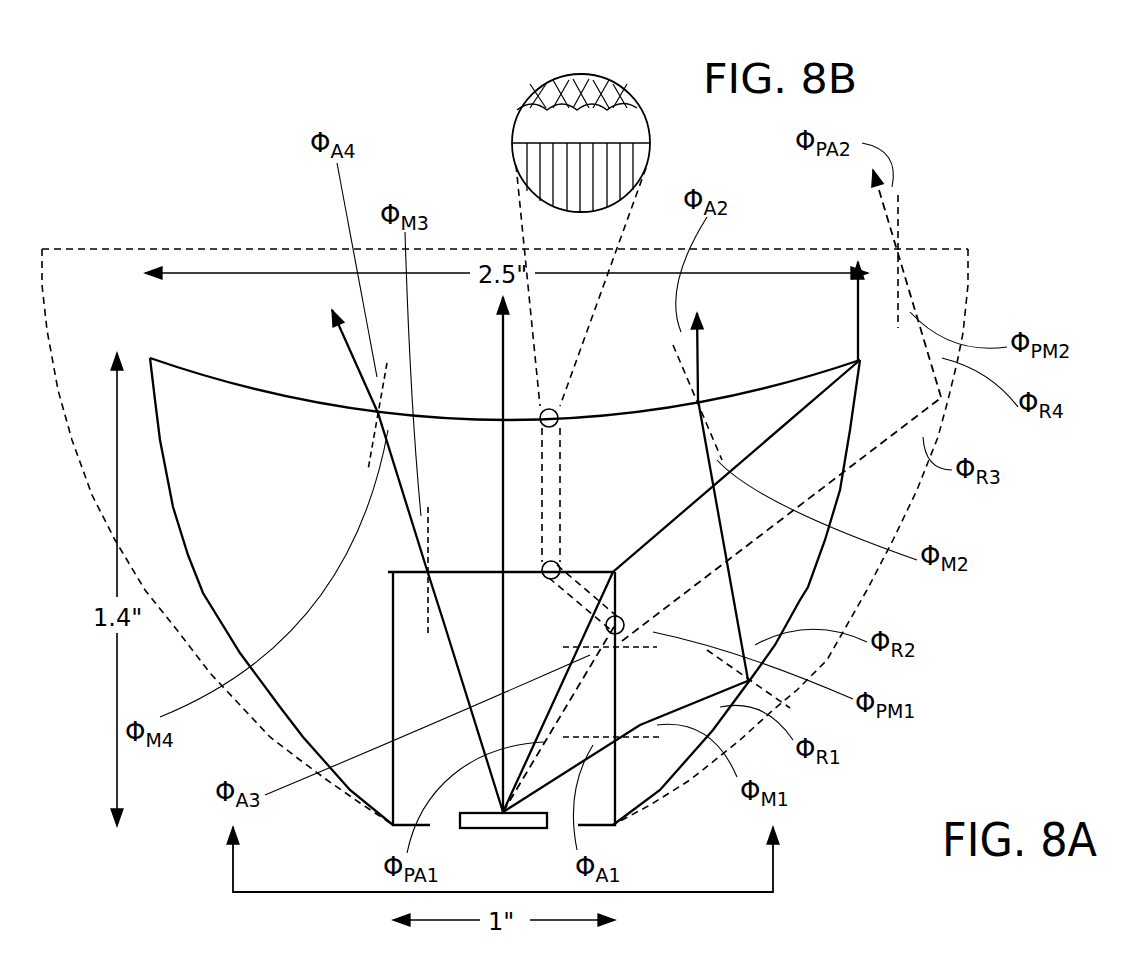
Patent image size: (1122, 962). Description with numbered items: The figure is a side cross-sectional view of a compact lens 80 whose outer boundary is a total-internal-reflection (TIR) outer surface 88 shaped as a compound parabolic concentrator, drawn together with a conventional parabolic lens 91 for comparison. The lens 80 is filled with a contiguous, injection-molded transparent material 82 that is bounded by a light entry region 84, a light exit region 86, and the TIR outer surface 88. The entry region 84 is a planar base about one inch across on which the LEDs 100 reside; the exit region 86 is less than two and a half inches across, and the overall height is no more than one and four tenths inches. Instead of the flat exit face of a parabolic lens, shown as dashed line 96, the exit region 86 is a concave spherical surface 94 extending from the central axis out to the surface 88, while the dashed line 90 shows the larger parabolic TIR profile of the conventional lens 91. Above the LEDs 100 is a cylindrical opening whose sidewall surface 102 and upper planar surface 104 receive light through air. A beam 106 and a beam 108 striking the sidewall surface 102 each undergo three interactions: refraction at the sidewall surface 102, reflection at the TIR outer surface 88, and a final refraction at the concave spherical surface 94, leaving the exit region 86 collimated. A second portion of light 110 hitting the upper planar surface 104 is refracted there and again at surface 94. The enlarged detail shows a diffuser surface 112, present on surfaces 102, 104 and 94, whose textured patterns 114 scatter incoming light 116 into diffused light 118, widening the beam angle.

In FIG. 8A, the lens 80 is at (127, 332).
In FIG. 8A, the material 82 is at (255, 465).
In FIG. 8A, the light entry region 84 is at (708, 897).
In FIG. 8A, the light exit region 86 is at (615, 373).
In FIG. 8A, the TIR outer surface 88 is at (837, 515).
In FIG. 8A, the dashed line (parabolic TIR) 90 is at (965, 293).
In FIG. 8A, the conventional parabolic lens 91 is at (990, 245).
In FIG. 8A, the concave spherical surface 94 is at (257, 388).
In FIG. 8A, the dashed line (flat exit surface) 96 is at (175, 248).
In FIG. 8A, the LEDs 100 is at (503, 828).
In FIG. 8A, the sidewall surface 102 is at (617, 582).
In FIG. 8A, the upper planar surface 104 is at (468, 572).
In FIG. 8A, the beam 106 is at (700, 352).
In FIG. 8A, the beam 108 is at (852, 335).
In FIG. 8A, the second portion of light 110 is at (353, 358).
In FIG. 8B, the diffuser surface 112 is at (530, 67).
In FIG. 8B, the textured surfaces and/or patterns 114 is at (518, 132).
In FIG. 8B, the light entering the surface 116 is at (643, 183).
In FIG. 8B, the scattered light 118 is at (620, 102).